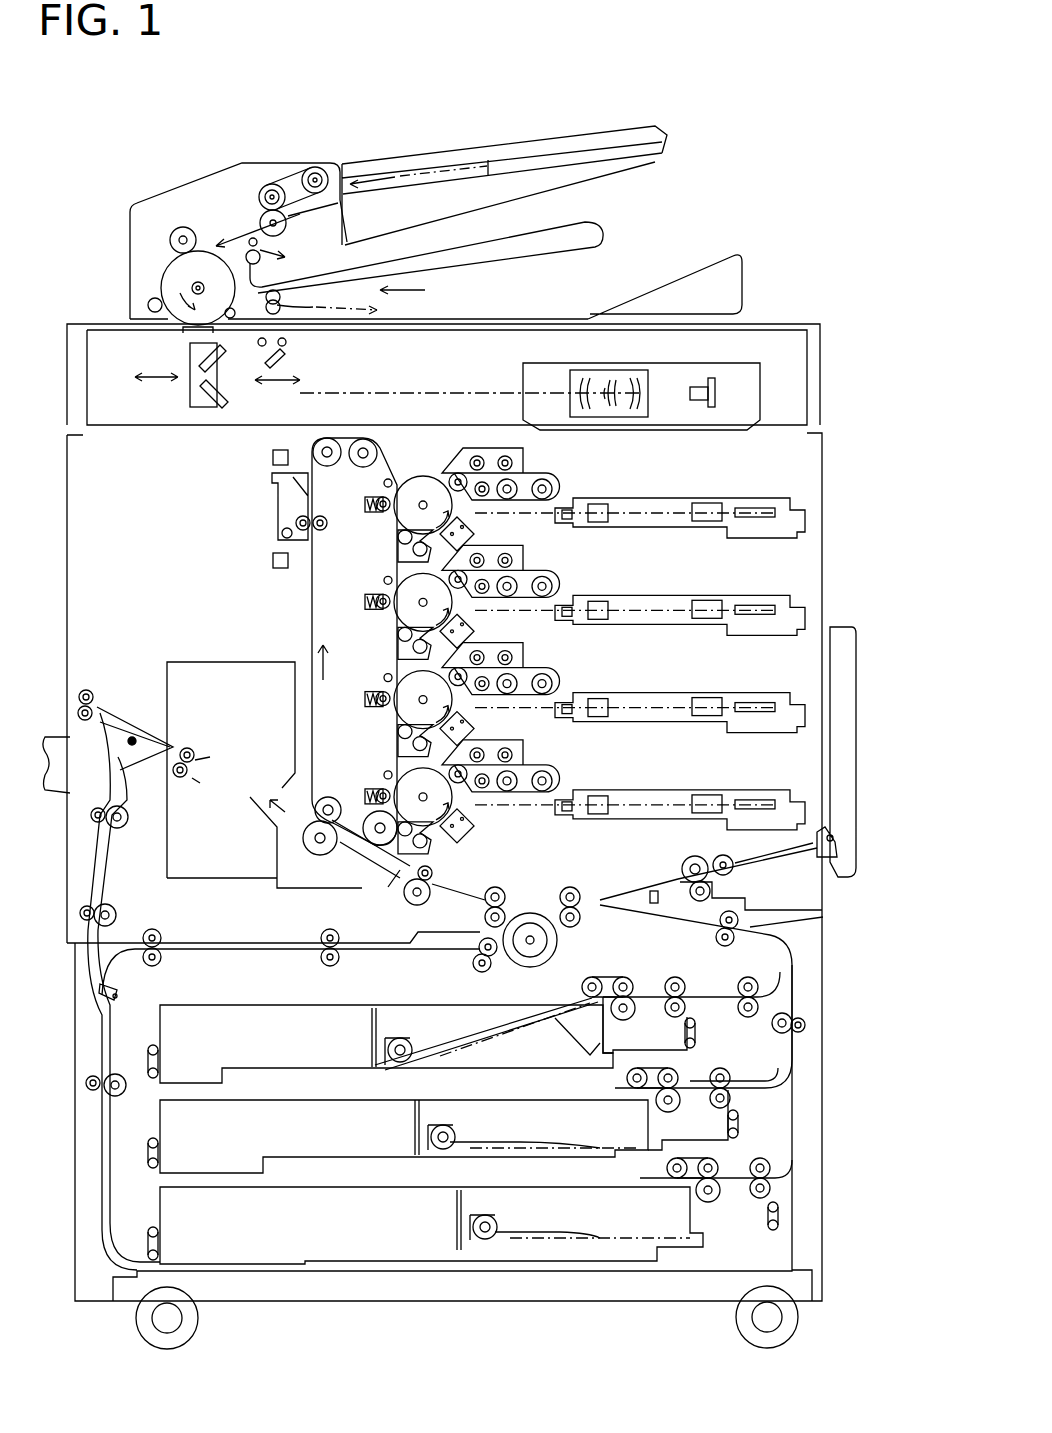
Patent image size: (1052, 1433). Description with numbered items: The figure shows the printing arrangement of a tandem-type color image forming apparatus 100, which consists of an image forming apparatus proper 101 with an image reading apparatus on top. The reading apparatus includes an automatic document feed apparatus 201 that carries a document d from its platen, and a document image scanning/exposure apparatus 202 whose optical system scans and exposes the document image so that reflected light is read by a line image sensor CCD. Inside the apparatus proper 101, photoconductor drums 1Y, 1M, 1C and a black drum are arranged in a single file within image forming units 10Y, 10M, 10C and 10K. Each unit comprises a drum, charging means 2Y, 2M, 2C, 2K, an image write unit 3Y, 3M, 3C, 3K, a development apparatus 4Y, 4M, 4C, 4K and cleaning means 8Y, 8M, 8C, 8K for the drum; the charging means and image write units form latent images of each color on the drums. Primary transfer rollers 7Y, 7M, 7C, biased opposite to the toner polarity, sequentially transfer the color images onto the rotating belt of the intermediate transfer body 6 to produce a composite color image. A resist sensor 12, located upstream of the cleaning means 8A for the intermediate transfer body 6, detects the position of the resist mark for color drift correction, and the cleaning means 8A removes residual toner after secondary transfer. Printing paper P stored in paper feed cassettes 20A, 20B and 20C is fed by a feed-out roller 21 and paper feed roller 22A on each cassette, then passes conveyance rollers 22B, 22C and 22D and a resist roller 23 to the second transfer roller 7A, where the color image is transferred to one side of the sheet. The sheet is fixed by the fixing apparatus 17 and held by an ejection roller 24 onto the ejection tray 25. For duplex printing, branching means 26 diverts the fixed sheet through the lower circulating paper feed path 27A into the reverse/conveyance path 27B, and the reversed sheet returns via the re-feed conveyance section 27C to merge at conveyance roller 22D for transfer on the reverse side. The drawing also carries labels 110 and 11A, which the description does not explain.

The color image forming apparatus 100 is at (136, 175).
The document d is at (512, 143).
The automatic document feed apparatus 201 is at (706, 197).
The image forming apparatus proper 101 is at (761, 258).
The document image scanning/exposure apparatus 202 is at (821, 302).
The line image sensor CCD is at (715, 395).
The image forming apparatus body 110 is at (152, 548).
The sensor 11A is at (273, 458).
The cleaning means for intermediate transfer body 8A is at (272, 508).
The resist sensor 12 is at (273, 560).
The fixing apparatus 17 is at (192, 660).
The ejection roller 24 is at (88, 688).
The ejection tray 25 is at (57, 735).
The branching means 26 is at (140, 770).
The lower circulating paper feed path 27A is at (108, 883).
The reverse/conveyance path 27B is at (105, 1055).
The re-feed conveyance section 27C is at (222, 944).
The second transfer roller 7A is at (318, 856).
The resist roller 23 is at (406, 897).
The intermediate transfer body 6 is at (310, 640).
The photoconductor drum 1Y is at (425, 478).
The photoconductor drum 1M is at (401, 690).
The photoconductor drum 1C is at (403, 691).
The charging means 2Y is at (474, 534).
The charging means 2M is at (475, 630).
The charging means 2C is at (474, 727).
The charging means 2K is at (483, 826).
The image write unit 3Y is at (731, 497).
The image write unit 3M is at (640, 590).
The image write unit 3C is at (640, 687).
The image write unit 3K is at (640, 786).
The development apparatus 4Y is at (447, 466).
The development apparatus 4M is at (506, 571).
The development apparatus 4C is at (504, 669).
The development apparatus 4K is at (504, 765).
The primary transfer roller 7Y is at (366, 502).
The primary transfer roller 7M is at (360, 698).
The primary transfer roller 7C is at (360, 701).
The cleaning means for photoconductor drum 8Y is at (398, 550).
The cleaning means for photoconductor drum 8M is at (386, 642).
The cleaning means for photoconductor drum 8C is at (389, 740).
The cleaning means for photoconductor drum 8K is at (439, 844).
The image forming unit 10Y is at (553, 459).
The image forming unit 10M is at (655, 561).
The image forming unit 10C is at (660, 658).
The image forming unit 10K is at (669, 756).
The conveyance roller 22D is at (572, 890).
The conveyance roller 22C is at (570, 930).
The conveyance roller 22B is at (720, 935).
The paper feed roller 22A is at (748, 977).
The feed-out roller 21 is at (622, 977).
The paper feed cassette 20A is at (240, 1005).
The paper feed cassette 20B is at (157, 1127).
The paper feed cassette 20C is at (157, 1207).
The printing paper P is at (503, 1027).